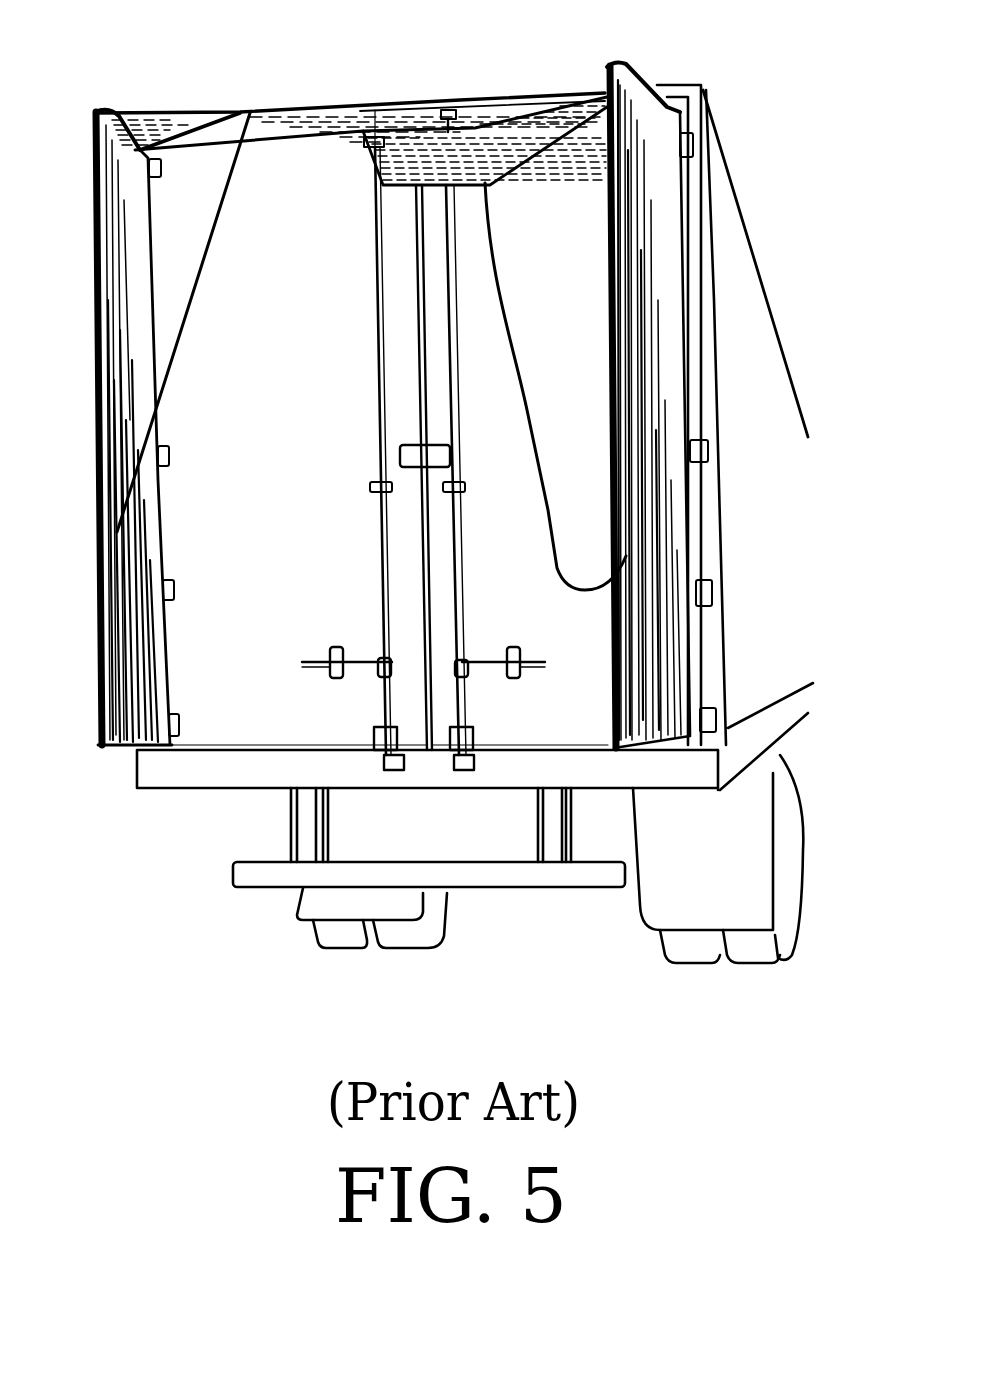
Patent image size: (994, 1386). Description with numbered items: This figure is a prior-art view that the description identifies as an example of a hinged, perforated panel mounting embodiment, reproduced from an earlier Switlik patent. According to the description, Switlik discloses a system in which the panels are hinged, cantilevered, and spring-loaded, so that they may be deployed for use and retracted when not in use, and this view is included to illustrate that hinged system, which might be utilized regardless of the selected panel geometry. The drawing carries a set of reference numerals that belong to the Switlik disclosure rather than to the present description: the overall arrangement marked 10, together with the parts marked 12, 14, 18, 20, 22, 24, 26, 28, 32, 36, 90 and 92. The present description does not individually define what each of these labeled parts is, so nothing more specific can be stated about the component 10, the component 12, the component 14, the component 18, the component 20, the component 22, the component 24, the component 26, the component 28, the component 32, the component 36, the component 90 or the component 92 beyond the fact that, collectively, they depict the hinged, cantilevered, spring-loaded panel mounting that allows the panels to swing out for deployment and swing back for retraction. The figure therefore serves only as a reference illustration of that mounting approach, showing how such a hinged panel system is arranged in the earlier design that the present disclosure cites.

The trailer 10 is at (760, 284).
The rear door frame 12 is at (693, 178).
The top rail 14 is at (505, 94).
The side wall 18 is at (782, 470).
The left door 20 is at (308, 489).
The right door 22 is at (583, 329).
The first lock rod 24 is at (384, 612).
The second lock rod 26 is at (463, 628).
The left swung-open door 28 is at (150, 250).
The right swung-open door 32 is at (684, 271).
The header panel 36 is at (305, 122).
The strap 90 is at (188, 312).
The cable 92 is at (533, 437).